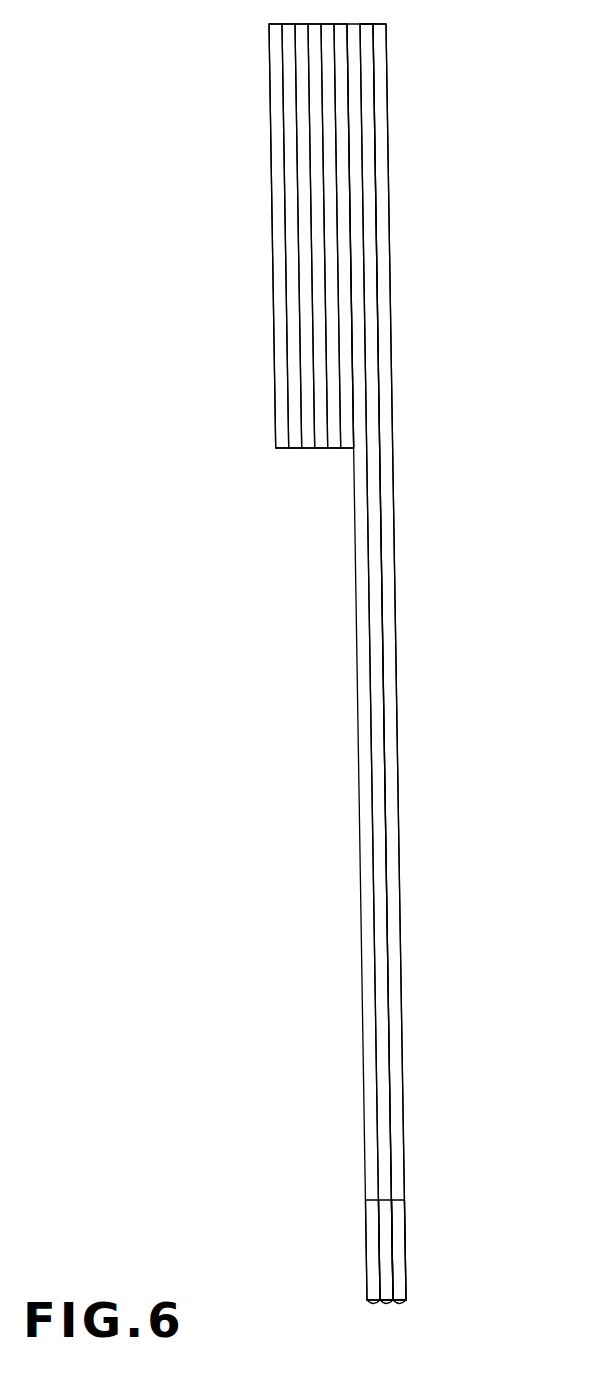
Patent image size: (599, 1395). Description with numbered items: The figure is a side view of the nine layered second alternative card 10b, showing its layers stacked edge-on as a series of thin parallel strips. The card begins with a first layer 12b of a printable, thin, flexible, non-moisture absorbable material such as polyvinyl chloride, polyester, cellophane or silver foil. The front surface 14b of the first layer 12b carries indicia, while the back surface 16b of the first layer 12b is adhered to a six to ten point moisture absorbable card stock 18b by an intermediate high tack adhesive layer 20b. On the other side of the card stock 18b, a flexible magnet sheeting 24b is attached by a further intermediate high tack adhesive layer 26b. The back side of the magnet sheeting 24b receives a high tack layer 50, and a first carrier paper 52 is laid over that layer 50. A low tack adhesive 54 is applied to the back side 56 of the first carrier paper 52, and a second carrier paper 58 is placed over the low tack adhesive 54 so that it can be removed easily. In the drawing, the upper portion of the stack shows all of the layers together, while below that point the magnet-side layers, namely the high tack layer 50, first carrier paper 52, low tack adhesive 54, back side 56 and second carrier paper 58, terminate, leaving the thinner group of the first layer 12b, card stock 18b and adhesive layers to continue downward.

The second alternative card 10b is at (455, 543).
The first layer 12b is at (398, 1302).
The front surface 14b is at (402, 1050).
The back surface 16b is at (392, 1188).
The card stock 18b is at (372, 1302).
The intermediate high tack adhesive layer 20b is at (385, 1302).
The flexible magnet sheeting 24b is at (334, 449).
The intermediate high tack adhesive layer 26b is at (347, 449).
The high tack layer 50 is at (321, 449).
The first carrier paper 52 is at (308, 449).
The low tack adhesive 54 is at (295, 449).
The back side of carrier paper 56 is at (300, 378).
The second carrier paper 58 is at (282, 449).